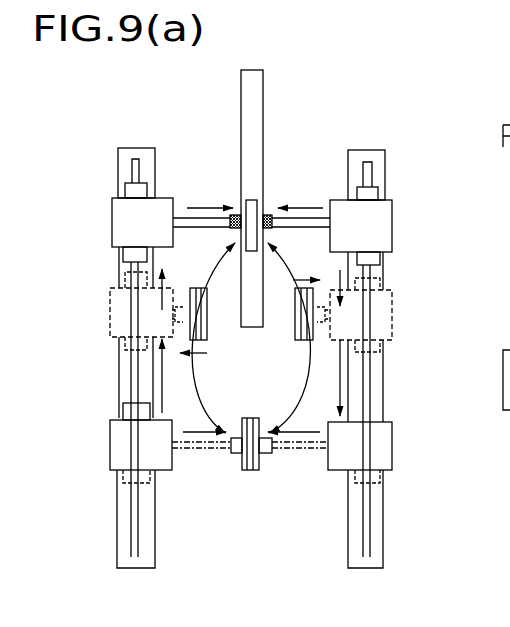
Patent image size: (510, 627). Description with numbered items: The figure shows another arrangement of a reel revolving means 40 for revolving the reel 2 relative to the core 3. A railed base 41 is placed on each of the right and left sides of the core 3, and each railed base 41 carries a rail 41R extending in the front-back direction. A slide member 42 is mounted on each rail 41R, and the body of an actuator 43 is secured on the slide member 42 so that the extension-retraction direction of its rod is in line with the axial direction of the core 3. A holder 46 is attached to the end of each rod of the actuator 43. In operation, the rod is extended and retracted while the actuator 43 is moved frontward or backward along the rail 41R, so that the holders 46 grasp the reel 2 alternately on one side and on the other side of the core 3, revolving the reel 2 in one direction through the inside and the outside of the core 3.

The core 3 is at (254, 105).
The reel 2 is at (254, 200).
The holder 46 is at (234, 212).
The reel revolving means 40 is at (329, 157).
The railed base 41 is at (137, 150).
The slide member 42 is at (134, 190).
The actuator 43 is at (124, 232).
The rail 41R is at (131, 380).